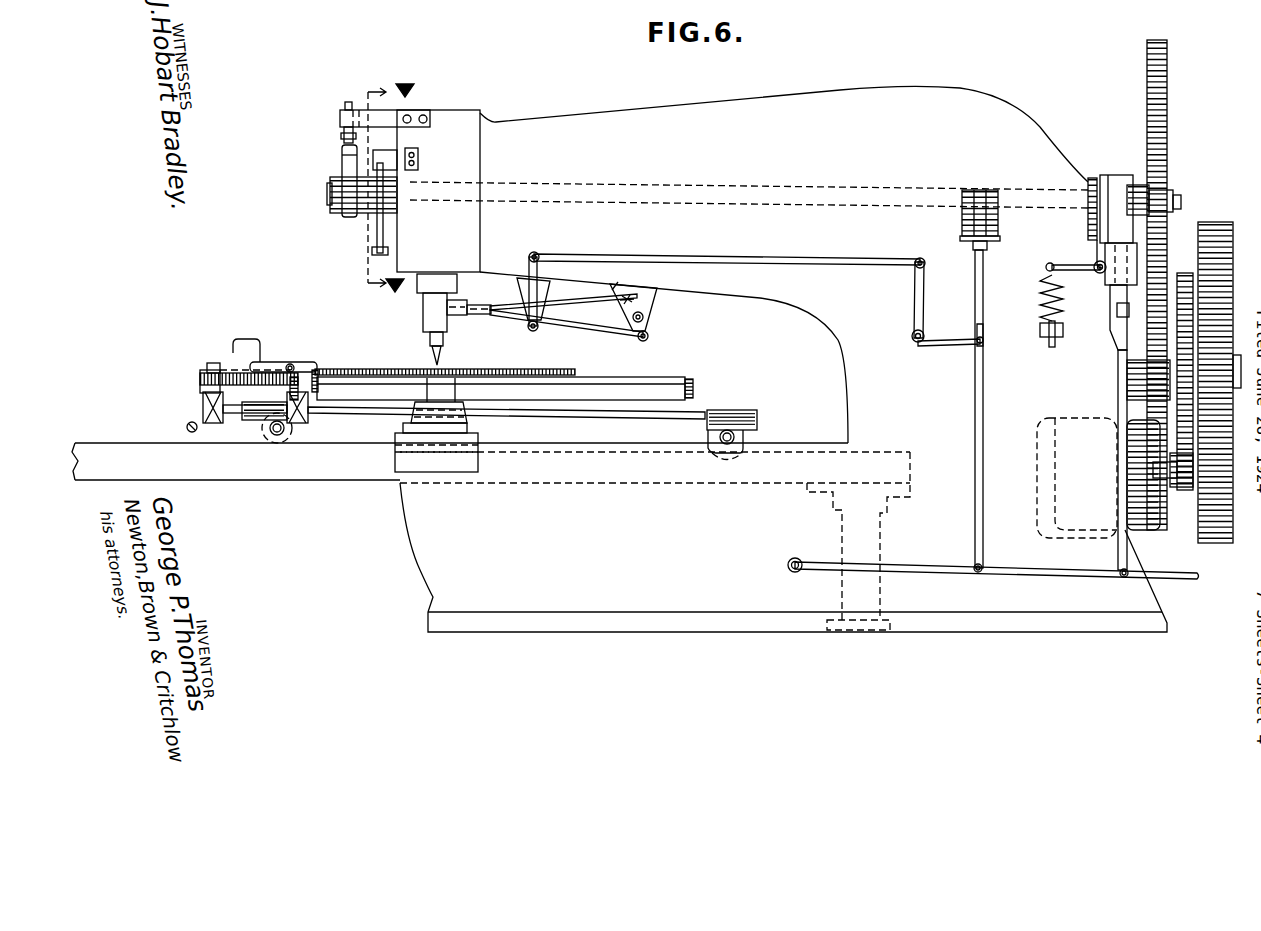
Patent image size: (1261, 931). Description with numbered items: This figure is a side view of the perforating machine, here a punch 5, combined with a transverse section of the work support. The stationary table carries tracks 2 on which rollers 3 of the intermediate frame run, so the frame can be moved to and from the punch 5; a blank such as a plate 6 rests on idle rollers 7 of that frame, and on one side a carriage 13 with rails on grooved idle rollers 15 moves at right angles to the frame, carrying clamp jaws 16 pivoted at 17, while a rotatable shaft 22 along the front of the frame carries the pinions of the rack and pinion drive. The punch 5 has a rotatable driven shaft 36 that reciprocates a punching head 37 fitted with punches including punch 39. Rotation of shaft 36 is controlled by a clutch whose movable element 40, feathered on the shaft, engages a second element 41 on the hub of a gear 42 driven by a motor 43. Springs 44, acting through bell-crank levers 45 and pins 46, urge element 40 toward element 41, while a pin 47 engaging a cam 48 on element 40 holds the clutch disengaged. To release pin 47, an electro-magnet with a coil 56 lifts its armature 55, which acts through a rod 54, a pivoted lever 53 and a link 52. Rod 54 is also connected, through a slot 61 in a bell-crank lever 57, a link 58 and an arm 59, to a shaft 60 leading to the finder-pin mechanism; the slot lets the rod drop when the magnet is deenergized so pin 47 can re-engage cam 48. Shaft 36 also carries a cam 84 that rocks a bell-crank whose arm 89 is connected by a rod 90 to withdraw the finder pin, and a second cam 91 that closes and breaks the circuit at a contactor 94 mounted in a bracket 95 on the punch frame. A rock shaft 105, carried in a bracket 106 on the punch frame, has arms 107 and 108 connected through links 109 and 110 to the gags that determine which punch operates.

The tracks 2 is at (262, 465).
The rollers 3 is at (283, 436).
The punch 5 is at (832, 93).
The plate 6 is at (477, 368).
The idle rollers 7 is at (548, 383).
The carriage 13 is at (242, 380).
The grooved idle rollers 15 is at (205, 400).
The jaws 16 is at (312, 362).
The pivot 17 is at (290, 364).
The rotatable shaft 22 is at (187, 428).
The driven shaft 36 is at (640, 188).
The punching head 37 is at (418, 278).
The punch 39 is at (429, 352).
The movable clutch element 40 is at (1115, 176).
The second clutch element 41 is at (1138, 184).
The gear 42 is at (1167, 116).
The motor 43 is at (1140, 520).
The springs 44 is at (1040, 313).
The bell-crank levers 45 is at (1065, 262).
The pins 46 is at (1087, 195).
The pin 47 is at (1130, 240).
The cam 48 is at (1150, 195).
The link 52 is at (1117, 350).
The pivoted lever 53 is at (1075, 576).
The rod 54 is at (985, 402).
The armature 55 is at (988, 243).
The coil 56 is at (1000, 190).
The bell-crank lever 57 is at (914, 292).
The link 58 is at (805, 257).
The arm 59 is at (545, 270).
The shaft 60 is at (532, 327).
The slot 61 is at (976, 329).
The cam 84 is at (355, 216).
The arm 89 is at (366, 201).
The rod 90 is at (373, 254).
The second cam 91 is at (342, 163).
The contactor 94 is at (343, 136).
The bracket 95 is at (340, 118).
The rock shaft 105 is at (645, 318).
The bracket 106 is at (658, 298).
The arm 107 is at (612, 290).
The arm 108 is at (650, 338).
The link 109 is at (586, 330).
The link 110 is at (621, 338).